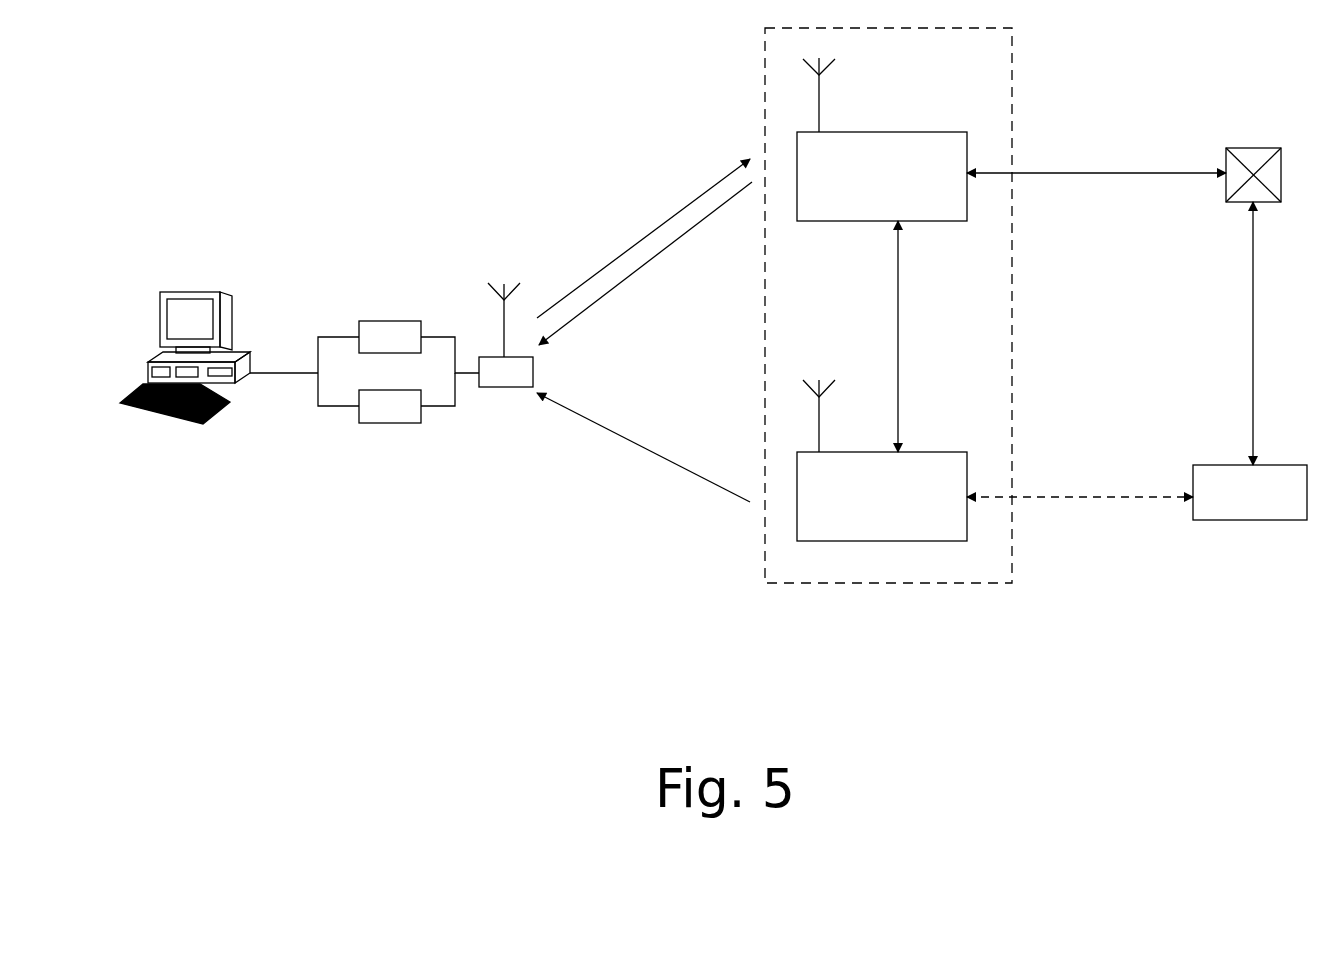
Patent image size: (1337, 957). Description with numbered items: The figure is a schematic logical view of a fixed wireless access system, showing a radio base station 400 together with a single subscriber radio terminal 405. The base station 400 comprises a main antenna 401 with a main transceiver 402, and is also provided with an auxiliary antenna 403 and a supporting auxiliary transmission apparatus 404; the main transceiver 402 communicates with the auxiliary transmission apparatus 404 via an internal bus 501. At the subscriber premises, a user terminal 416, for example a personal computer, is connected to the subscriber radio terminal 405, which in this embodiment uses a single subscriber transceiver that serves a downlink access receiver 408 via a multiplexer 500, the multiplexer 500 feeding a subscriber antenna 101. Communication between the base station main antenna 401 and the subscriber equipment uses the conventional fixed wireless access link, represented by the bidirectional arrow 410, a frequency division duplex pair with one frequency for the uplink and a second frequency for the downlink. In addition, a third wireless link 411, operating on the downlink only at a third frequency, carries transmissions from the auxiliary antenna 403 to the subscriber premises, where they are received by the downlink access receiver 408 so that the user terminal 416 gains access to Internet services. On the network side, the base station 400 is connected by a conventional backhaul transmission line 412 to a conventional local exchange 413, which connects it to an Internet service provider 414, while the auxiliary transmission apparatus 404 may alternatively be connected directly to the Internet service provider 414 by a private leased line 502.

The user terminal 416 is at (200, 292).
The downlink access receiver 408 is at (392, 321).
The subscriber radio terminal 405 is at (388, 423).
The antenna 101 is at (504, 310).
The multiplexer 500 is at (500, 387).
The bidirectional arrow 410 is at (626, 251).
The third wireless link 411 is at (639, 476).
The radio base station 400 is at (838, 585).
The main antenna 401 is at (819, 107).
The main transceiver 402 is at (940, 132).
The auxiliary antenna 403 is at (819, 415).
The auxiliary transmission apparatus 404 is at (885, 545).
The internal bus 501 is at (898, 393).
The backhaul transmission line 412 is at (1082, 173).
The local exchange 413 is at (1254, 148).
The private leased line 502 is at (1105, 497).
The Internet service provider 414 is at (1230, 520).